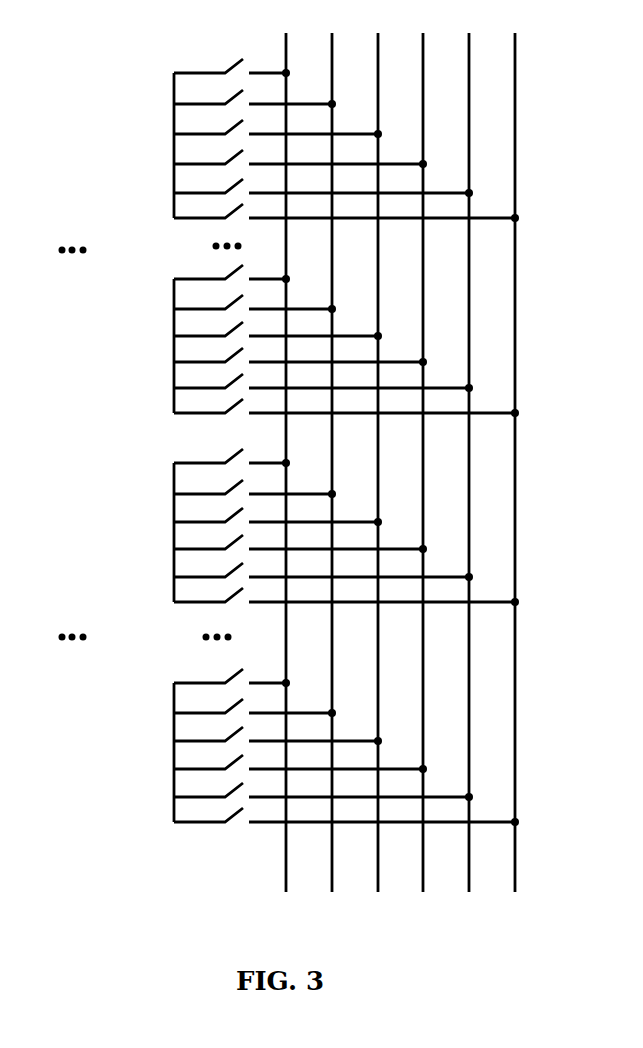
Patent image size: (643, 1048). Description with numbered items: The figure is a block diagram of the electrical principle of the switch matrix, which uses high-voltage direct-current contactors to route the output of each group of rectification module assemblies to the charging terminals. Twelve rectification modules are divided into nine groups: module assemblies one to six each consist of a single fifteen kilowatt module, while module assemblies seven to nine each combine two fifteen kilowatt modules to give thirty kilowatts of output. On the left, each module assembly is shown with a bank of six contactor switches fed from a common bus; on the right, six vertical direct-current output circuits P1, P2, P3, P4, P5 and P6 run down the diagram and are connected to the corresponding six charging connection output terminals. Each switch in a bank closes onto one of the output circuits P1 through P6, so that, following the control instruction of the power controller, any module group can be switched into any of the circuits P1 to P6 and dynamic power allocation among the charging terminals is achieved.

The direct-current output circuit one P1 is at (286, 484).
The direct-current output circuit two P2 is at (332, 484).
The direct-current output circuit three P3 is at (378, 484).
The direct-current output circuit four P4 is at (423, 484).
The direct-current output circuit five P5 is at (469, 484).
The direct-current output circuit six P6 is at (515, 484).